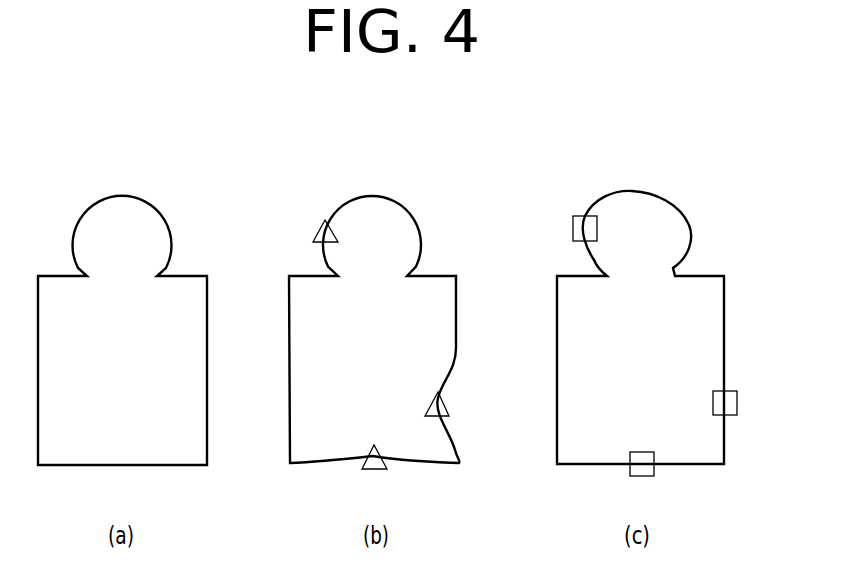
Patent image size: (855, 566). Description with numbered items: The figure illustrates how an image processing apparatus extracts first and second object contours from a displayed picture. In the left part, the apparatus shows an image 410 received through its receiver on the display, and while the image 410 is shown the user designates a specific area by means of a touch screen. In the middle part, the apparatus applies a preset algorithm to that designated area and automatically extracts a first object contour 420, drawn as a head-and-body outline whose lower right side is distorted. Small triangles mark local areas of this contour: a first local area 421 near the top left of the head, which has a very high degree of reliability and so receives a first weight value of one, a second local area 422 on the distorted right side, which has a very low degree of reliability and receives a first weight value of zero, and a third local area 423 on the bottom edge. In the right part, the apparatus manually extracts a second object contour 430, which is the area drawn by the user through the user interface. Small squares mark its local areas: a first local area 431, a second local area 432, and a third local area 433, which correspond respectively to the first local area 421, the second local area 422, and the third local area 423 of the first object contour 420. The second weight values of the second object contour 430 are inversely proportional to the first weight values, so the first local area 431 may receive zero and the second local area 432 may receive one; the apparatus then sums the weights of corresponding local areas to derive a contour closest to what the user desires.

The image 410 is at (121, 195).
The first object contour 420 is at (371, 195).
The first local area 421 is at (322, 222).
The second local area 422 is at (451, 404).
The third local area 423 is at (388, 467).
The second object contour 430 is at (636, 191).
The first local area 431 is at (583, 218).
The second local area 432 is at (738, 401).
The third local area 433 is at (655, 470).